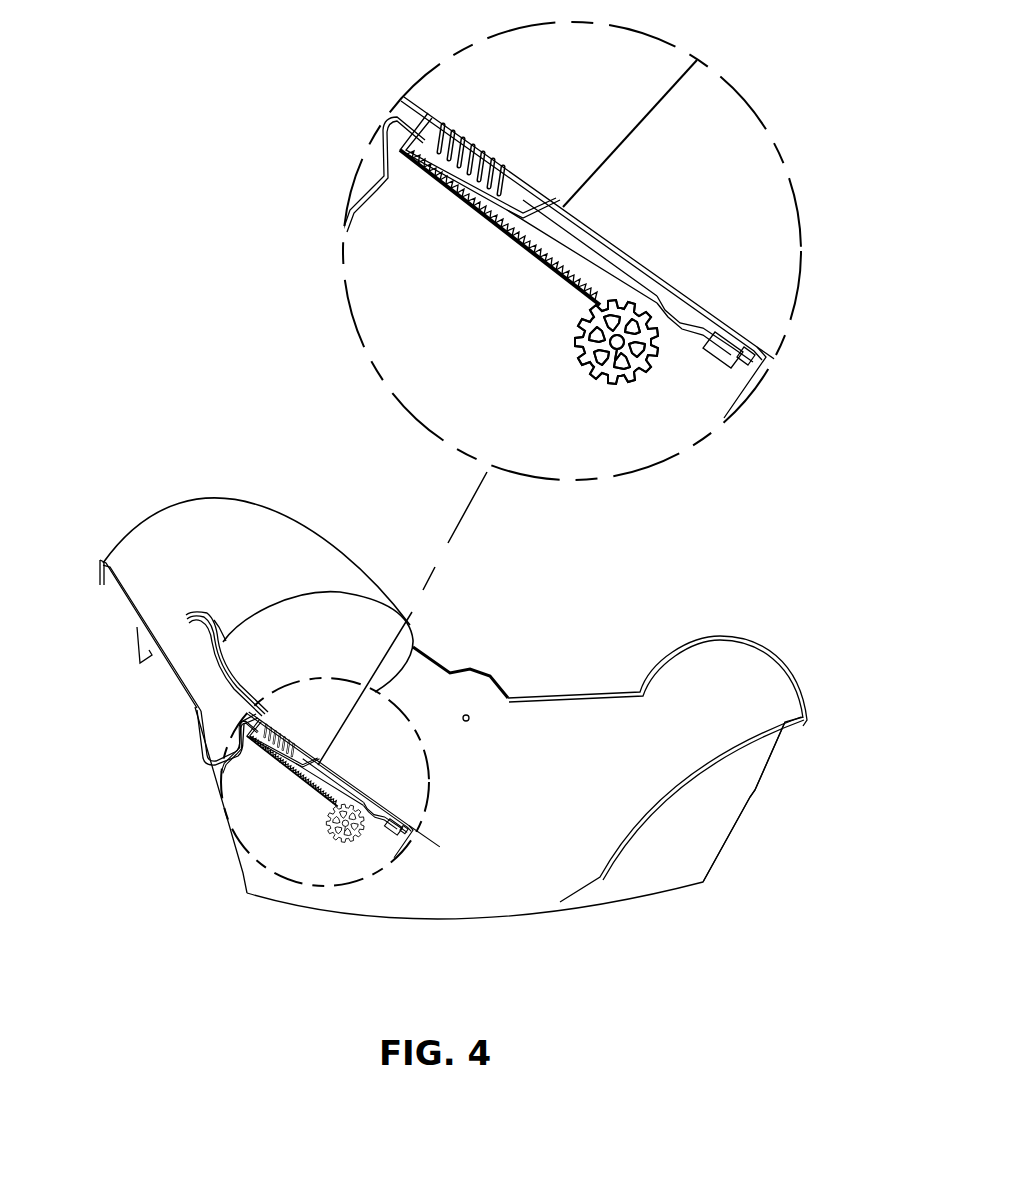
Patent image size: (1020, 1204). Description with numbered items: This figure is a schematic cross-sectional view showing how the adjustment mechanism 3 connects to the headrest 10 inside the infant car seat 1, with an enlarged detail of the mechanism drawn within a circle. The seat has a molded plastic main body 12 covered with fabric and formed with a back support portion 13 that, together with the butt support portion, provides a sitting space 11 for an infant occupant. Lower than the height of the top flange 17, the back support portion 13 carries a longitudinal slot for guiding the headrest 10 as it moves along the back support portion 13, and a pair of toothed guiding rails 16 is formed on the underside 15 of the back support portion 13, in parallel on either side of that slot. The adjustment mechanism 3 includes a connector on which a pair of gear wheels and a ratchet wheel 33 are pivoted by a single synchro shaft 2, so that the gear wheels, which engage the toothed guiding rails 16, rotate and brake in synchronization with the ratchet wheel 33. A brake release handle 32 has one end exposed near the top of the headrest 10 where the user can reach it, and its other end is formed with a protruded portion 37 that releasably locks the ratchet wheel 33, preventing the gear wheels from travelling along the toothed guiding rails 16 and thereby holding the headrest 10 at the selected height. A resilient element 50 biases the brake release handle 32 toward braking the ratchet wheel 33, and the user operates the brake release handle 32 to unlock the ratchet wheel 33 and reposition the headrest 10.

The child safety seat 1 is at (523, 668).
The synchro shaft 2 is at (607, 377).
The adjustment mechanism 3 is at (415, 432).
The headrest 10 is at (330, 640).
The sitting space 11 is at (528, 750).
The main body 12 is at (677, 787).
The back support portion 13 is at (775, 352).
The underside 15 is at (380, 177).
The toothed guiding rails 16 is at (470, 197).
The top flange 17 is at (103, 560).
The brake release handle 32 is at (195, 610).
The ratchet wheel 33 is at (578, 338).
The protruded portion 37 is at (657, 303).
The resilient element 50 is at (490, 150).